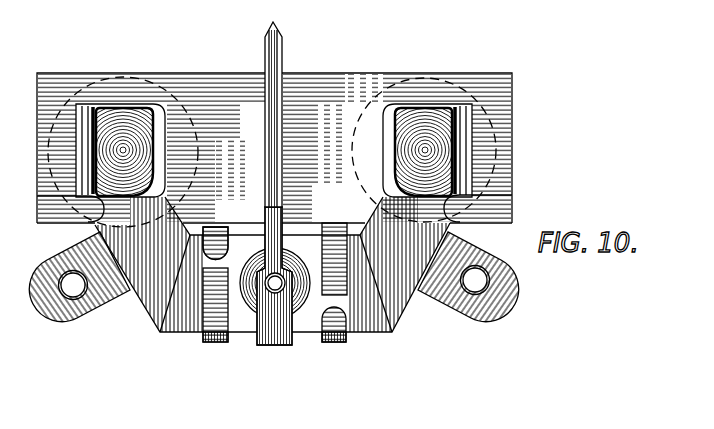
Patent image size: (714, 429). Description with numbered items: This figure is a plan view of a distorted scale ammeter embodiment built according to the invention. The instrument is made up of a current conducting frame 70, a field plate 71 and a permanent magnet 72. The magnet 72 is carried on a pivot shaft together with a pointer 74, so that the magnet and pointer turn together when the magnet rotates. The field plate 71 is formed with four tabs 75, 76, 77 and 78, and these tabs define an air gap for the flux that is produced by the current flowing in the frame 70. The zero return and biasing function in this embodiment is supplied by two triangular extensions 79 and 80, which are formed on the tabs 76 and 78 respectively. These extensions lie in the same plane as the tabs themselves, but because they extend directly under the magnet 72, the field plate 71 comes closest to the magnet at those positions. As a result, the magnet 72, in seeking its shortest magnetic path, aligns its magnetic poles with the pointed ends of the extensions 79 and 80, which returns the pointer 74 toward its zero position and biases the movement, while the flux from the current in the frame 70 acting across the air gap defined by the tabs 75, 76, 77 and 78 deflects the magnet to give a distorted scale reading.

The current conducting frame 70 is at (512, 207).
The field plate 71 is at (317, 351).
The permanent magnet 72 is at (295, 258).
The pointer 74 is at (283, 66).
The tab 75 is at (208, 253).
The tab 76 is at (212, 342).
The tab 77 is at (340, 340).
The tab 78 is at (347, 252).
The triangular extension 79 is at (269, 321).
The triangular extension 80 is at (287, 335).